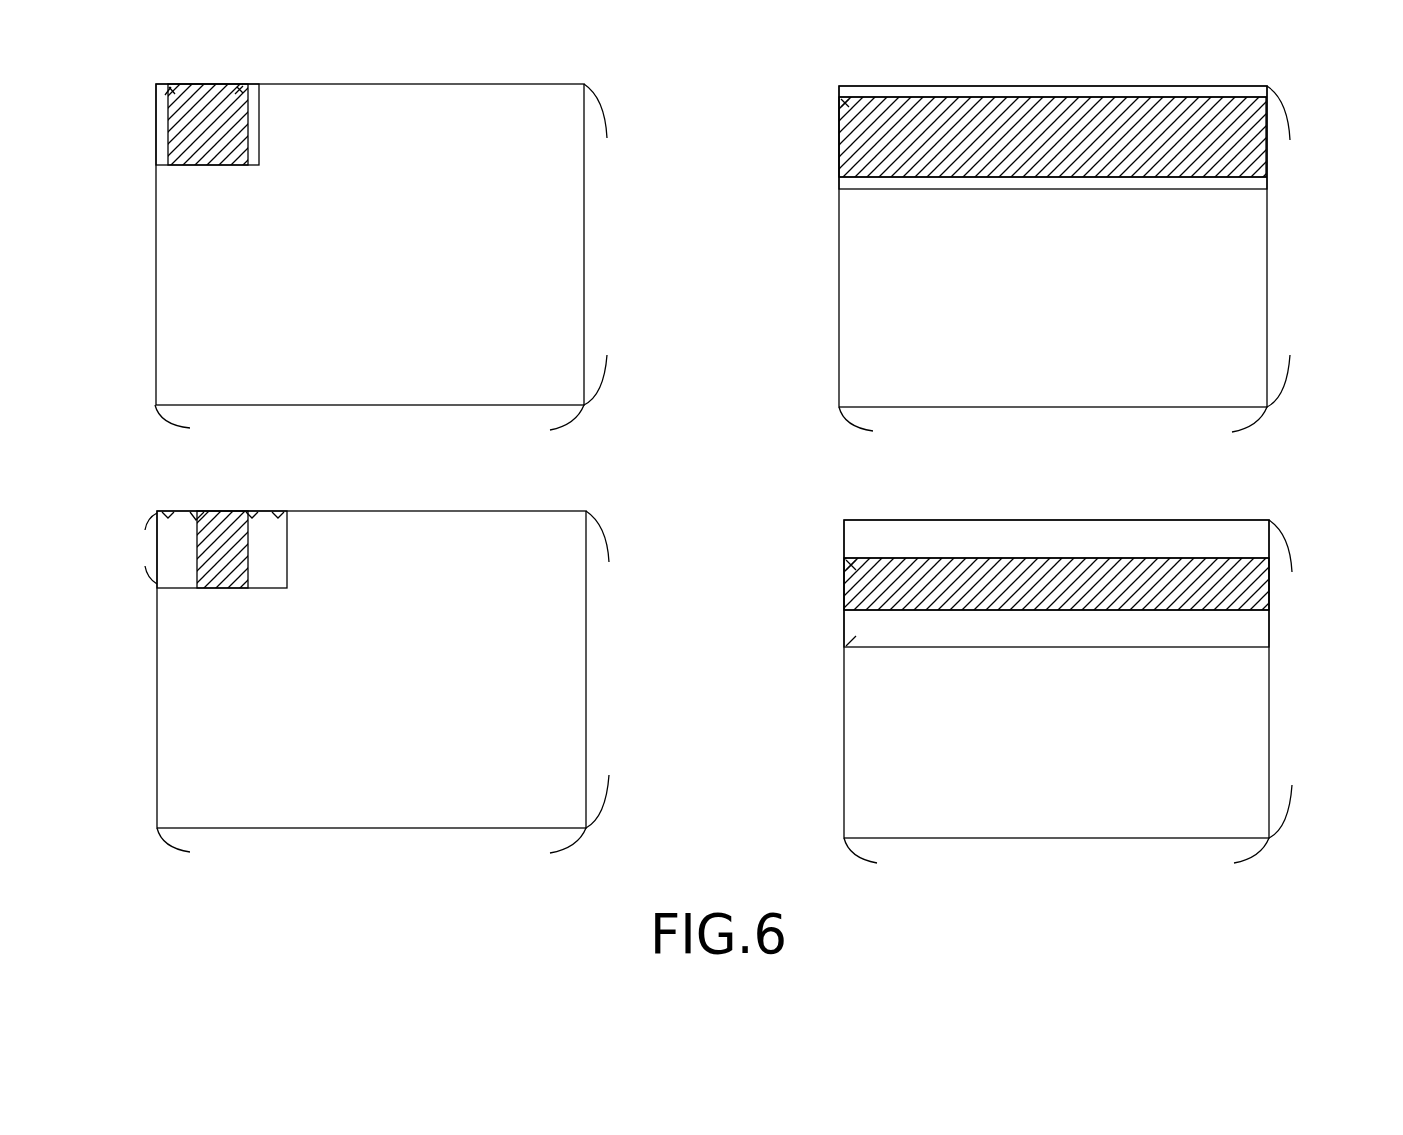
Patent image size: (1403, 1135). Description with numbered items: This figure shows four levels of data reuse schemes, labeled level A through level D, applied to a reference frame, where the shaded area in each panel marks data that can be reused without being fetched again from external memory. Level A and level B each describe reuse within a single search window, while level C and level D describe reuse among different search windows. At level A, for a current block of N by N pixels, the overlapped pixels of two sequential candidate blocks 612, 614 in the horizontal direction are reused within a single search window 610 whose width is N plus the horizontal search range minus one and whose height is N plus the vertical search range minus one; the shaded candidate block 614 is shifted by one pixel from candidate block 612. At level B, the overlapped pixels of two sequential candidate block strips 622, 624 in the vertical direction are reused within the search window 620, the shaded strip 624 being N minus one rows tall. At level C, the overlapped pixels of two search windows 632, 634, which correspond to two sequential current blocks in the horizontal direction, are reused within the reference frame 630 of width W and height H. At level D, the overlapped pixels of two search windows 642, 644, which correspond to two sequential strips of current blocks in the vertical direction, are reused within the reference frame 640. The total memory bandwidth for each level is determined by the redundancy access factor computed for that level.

The search window 610 is at (156, 248).
The candidate block 612 is at (258, 84).
The candidate block 614 is at (250, 165).
The search window 620 is at (838, 250).
The candidate block strip 622 is at (838, 88).
The candidate block strip 624 is at (1052, 137).
The reference frame 630 is at (156, 673).
The search window 632 is at (276, 511).
The search window 634 is at (282, 588).
The reference frame 640 is at (841, 682).
The search window 642 is at (843, 521).
The search window 644 is at (1056, 584).